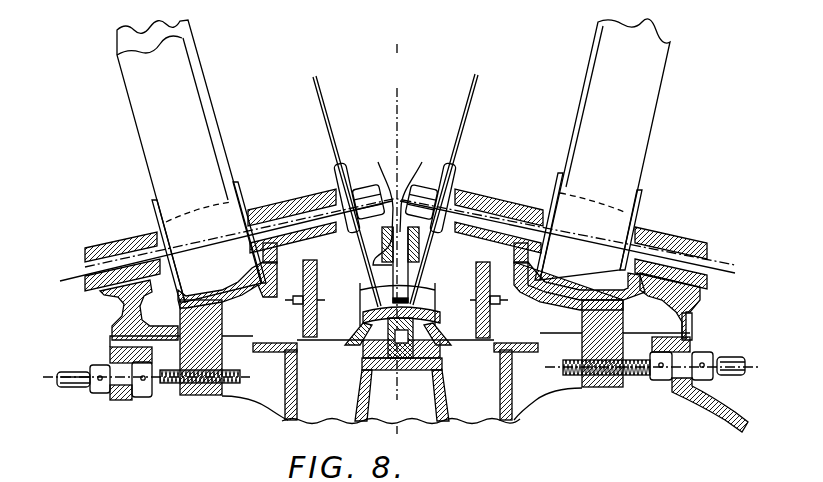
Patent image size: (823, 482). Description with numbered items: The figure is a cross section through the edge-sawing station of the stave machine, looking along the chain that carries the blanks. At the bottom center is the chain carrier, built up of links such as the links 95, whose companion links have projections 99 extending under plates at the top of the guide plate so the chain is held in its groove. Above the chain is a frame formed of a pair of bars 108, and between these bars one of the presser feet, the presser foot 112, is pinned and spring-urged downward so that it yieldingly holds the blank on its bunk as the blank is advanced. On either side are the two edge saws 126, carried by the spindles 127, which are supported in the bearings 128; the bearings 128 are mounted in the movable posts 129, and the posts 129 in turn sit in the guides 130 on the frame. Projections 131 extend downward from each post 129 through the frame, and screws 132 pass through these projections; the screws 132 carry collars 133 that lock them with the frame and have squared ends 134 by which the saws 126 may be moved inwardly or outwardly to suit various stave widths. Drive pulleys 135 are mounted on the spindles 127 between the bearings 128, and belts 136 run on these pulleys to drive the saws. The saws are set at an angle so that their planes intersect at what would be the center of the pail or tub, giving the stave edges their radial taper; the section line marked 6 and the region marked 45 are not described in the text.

The section line 6- 6 is at (396, 239).
The bore 45 is at (424, 297).
The links 95 is at (366, 366).
The projections 99 is at (429, 361).
The bars 108 is at (422, 188).
The presser foot 112 is at (376, 205).
The edge saws 126 is at (322, 101).
The spindles 127 is at (100, 272).
The bearings 128 is at (135, 233).
The movable posts 129 is at (127, 310).
The guides 130 is at (692, 327).
The projections 131 is at (198, 397).
The screws 132 is at (232, 385).
The collars 133 is at (143, 392).
The squared ends 134 is at (68, 376).
The drive pulleys 135 is at (233, 182).
The belts 136 is at (143, 113).